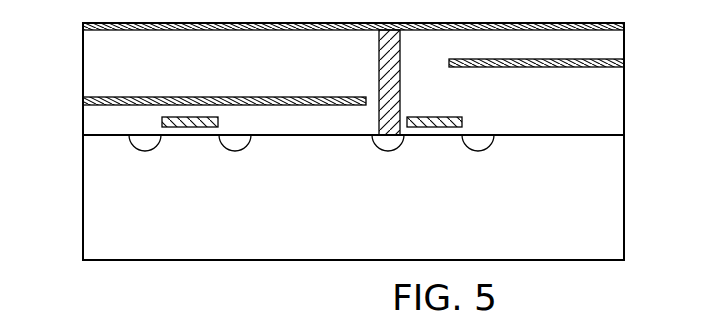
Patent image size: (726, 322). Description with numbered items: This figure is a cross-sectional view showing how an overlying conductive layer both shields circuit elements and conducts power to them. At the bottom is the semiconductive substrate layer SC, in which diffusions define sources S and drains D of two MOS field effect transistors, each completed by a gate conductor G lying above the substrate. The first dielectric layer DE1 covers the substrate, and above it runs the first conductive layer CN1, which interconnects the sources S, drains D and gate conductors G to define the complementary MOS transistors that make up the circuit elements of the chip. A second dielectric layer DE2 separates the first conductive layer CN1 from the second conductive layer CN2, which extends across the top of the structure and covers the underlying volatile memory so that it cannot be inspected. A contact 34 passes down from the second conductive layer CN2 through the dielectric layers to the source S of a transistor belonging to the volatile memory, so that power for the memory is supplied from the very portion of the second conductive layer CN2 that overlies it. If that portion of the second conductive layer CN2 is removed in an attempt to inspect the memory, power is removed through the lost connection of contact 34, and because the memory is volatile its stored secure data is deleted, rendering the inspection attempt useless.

The semiconductive substrate layer SC is at (624, 226).
The first dielectric layer DE1 is at (624, 120).
The second dielectric layer DE2 is at (624, 47).
The first conductive layer CN1 is at (83, 99).
The second conductive layer CN2 is at (624, 27).
The contact 34 is at (400, 78).
The gate conductor G is at (162, 120).
The source S is at (266, 155).
The drain D is at (356, 155).